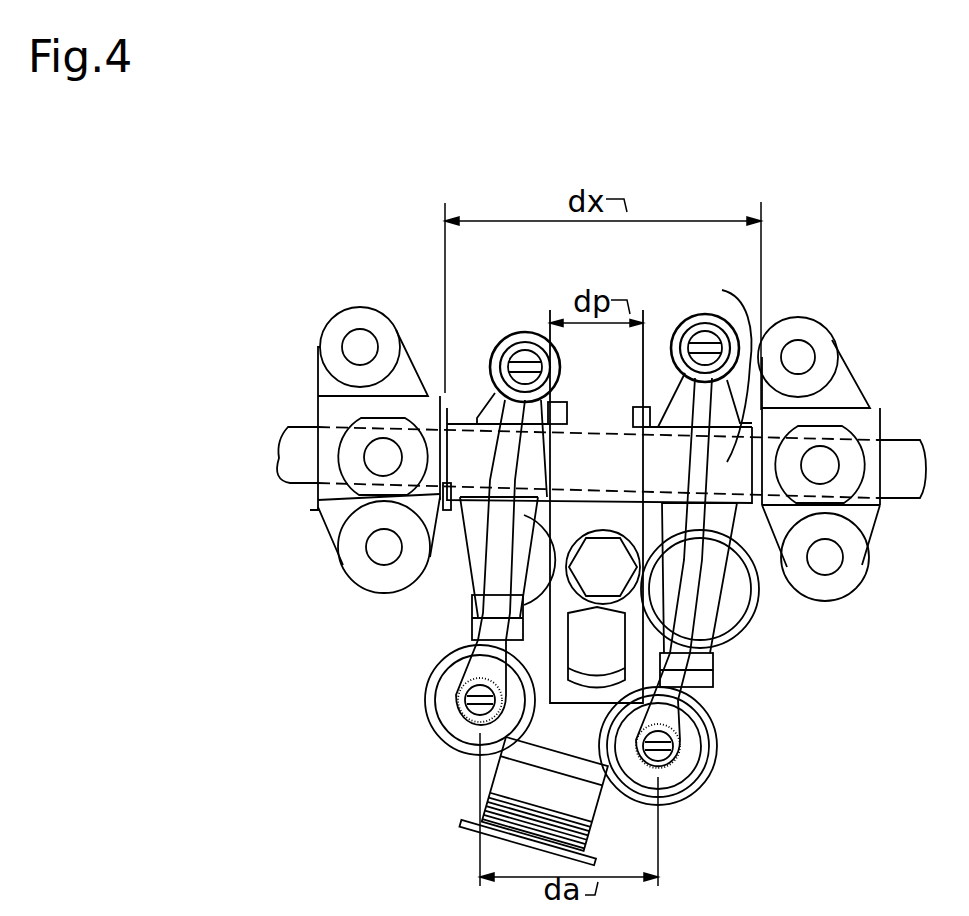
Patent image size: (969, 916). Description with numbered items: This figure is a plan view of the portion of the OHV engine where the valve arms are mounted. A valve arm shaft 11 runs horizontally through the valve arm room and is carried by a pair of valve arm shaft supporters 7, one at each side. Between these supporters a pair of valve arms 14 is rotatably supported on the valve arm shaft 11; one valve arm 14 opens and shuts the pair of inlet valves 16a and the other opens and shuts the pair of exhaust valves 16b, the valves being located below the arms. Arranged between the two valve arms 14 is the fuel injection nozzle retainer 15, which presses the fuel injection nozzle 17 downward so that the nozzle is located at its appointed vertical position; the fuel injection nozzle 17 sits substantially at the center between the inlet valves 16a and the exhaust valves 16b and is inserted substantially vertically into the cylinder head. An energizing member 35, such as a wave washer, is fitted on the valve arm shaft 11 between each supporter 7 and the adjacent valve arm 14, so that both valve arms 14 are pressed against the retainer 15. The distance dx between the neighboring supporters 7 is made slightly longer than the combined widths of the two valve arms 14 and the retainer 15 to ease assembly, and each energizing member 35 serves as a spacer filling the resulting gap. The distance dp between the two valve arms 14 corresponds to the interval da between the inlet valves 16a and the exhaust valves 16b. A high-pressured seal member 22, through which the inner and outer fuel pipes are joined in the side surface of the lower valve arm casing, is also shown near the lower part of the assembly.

The valve arm shaft supporter 7 is at (328, 387).
The valve arm shaft 11 is at (888, 440).
The valve arm 14 is at (472, 553).
The fuel injection nozzle retainer 15 is at (602, 440).
The inlet valve 16a is at (443, 690).
The exhaust valve 16b is at (717, 717).
The fuel injection nozzle 17 is at (607, 550).
The high-pressured seal member 22 is at (596, 800).
The energizing member 35 is at (460, 420).